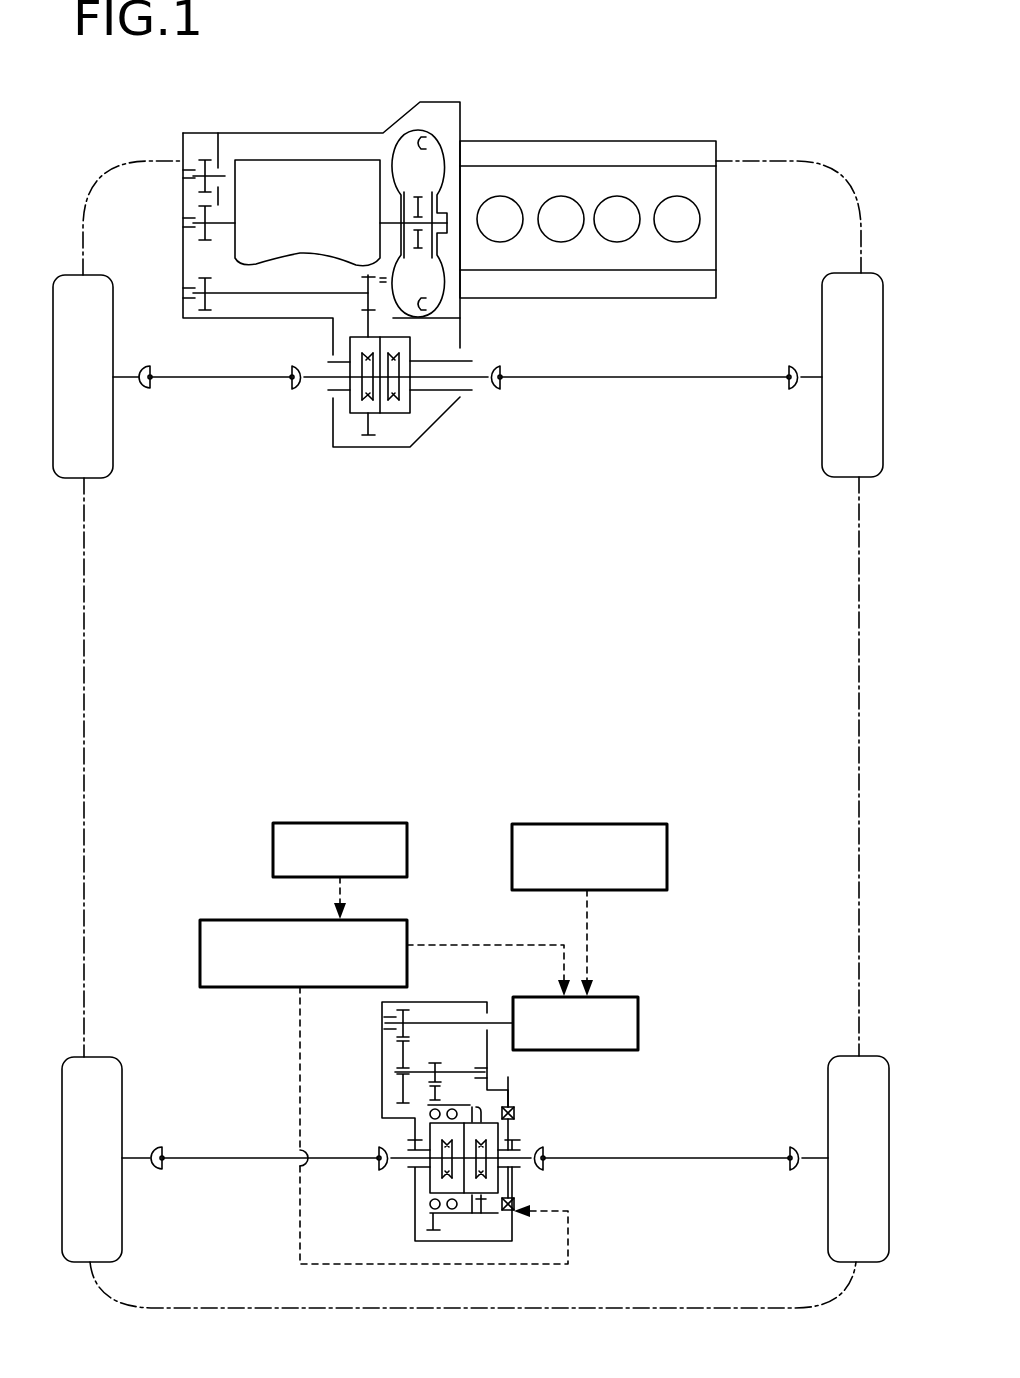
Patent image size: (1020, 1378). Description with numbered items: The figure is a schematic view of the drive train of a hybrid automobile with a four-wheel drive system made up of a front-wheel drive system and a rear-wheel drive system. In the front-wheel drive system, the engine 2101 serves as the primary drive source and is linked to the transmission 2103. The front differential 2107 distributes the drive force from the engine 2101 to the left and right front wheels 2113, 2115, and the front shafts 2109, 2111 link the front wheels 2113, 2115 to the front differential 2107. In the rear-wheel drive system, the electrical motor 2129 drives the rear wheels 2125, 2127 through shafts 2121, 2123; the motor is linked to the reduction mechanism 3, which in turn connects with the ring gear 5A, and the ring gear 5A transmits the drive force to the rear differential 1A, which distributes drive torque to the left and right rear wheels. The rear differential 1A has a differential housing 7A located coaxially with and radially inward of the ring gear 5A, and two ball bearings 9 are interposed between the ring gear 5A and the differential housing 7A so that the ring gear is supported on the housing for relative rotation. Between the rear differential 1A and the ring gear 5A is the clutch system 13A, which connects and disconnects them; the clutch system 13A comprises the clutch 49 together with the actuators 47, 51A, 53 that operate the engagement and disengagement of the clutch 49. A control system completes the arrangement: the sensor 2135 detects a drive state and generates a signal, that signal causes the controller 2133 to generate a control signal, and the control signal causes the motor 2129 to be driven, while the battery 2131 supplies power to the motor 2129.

The engine 2101 is at (555, 141).
The transmission 2103 is at (255, 131).
The front differential 2107 is at (347, 422).
The front shaft 2109 is at (220, 380).
The front shaft 2111 is at (608, 380).
The front wheel 2113 is at (105, 275).
The front wheel 2115 is at (838, 273).
The rear left drive shaft 2121 is at (218, 1158).
The rear right drive shaft 2123 is at (716, 1160).
The rear wheel 2125 is at (115, 1057).
The rear wheel 2127 is at (838, 1056).
The electrical motor 2129 is at (640, 1010).
The battery 2131 is at (668, 852).
The controller 2133 is at (222, 920).
The sensor 2135 is at (338, 823).
The reduction mechanism 3 is at (368, 1047).
The rear differential 1A is at (388, 1187).
The ring gear 5A is at (440, 1232).
The differential housing 7A is at (512, 1175).
The ball bearings 9 is at (420, 1203).
The clutch system 13A is at (620, 1102).
The clutch 49 is at (514, 1102).
The actuator 51A is at (508, 1077).
The actuator 53 is at (443, 1114).
The actuator 47 is at (476, 1114).